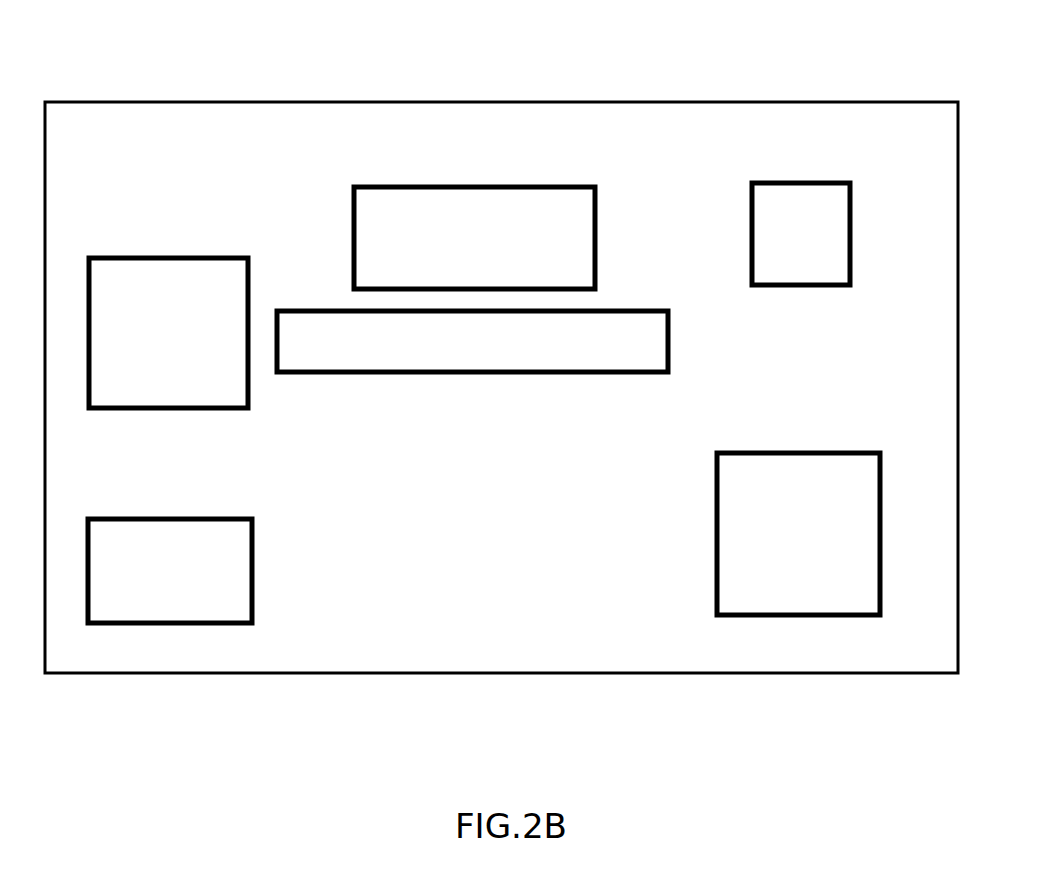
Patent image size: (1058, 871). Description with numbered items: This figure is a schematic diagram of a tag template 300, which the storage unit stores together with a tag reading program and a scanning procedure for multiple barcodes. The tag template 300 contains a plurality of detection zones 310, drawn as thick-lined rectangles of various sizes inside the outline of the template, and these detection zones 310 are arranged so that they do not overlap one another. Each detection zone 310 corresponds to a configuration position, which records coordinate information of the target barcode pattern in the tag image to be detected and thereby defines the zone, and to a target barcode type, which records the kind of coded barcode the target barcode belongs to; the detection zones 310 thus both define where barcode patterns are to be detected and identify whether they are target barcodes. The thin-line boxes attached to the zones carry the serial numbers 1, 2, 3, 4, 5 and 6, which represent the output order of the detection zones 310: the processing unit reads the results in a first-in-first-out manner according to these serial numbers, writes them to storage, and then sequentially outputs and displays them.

The tag template 300 is at (575, 102).
The detection zone 310 is at (467, 187).
The component 1 is at (474, 213).
The component 2 is at (472, 317).
The component 3 is at (168, 309).
The component 4 is at (801, 210).
The component 5 is at (775, 533).
The component 6 is at (192, 571).